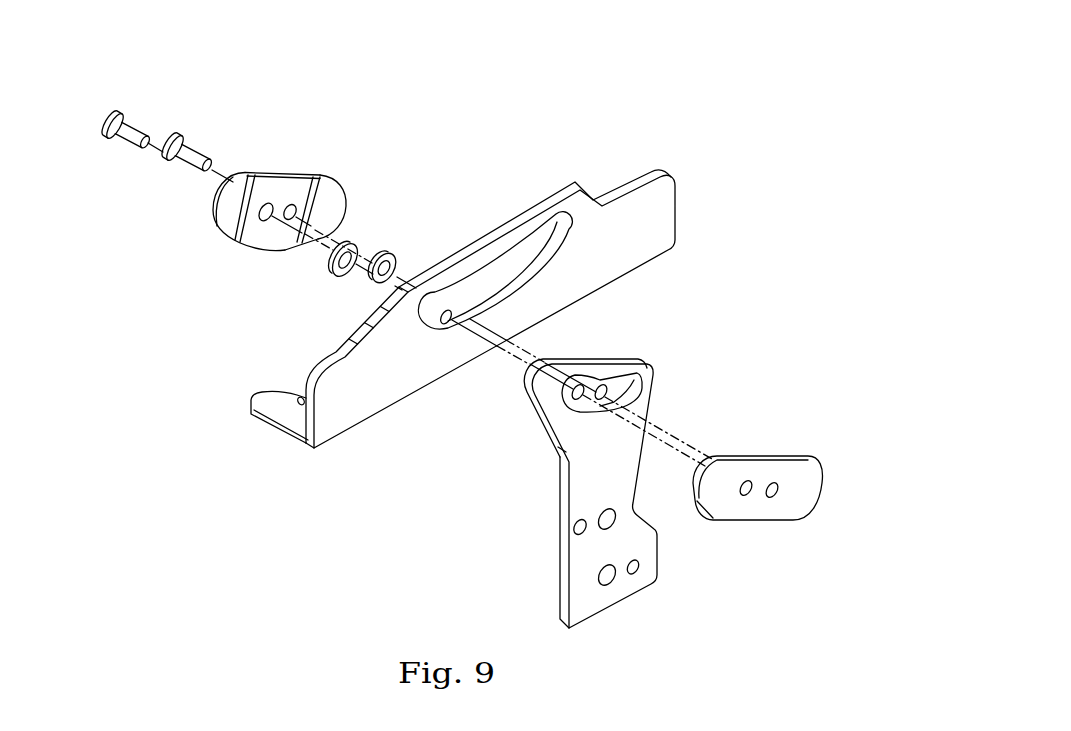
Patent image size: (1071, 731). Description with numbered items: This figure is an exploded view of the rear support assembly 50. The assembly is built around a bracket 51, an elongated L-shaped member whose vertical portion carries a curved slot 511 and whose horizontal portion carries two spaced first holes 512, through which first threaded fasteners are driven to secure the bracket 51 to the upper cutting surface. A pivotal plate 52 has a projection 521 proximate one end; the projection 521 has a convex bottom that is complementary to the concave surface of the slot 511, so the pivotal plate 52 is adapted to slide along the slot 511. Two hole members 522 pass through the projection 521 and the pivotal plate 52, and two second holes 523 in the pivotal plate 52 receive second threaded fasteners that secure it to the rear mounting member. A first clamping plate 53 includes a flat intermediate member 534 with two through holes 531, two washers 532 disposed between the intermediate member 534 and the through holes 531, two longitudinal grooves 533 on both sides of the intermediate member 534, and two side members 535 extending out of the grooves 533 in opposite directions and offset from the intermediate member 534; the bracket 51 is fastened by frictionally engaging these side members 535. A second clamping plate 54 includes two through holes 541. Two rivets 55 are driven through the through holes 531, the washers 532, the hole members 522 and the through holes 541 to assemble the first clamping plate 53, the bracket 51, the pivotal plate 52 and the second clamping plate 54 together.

The rear support assembly 50 is at (555, 110).
The bracket 51 is at (638, 228).
The curved slot 511 is at (518, 290).
The first holes 512 is at (258, 393).
The pivotal plate 52 is at (583, 487).
The projection 521 is at (560, 402).
The hole members 522 is at (600, 393).
The second holes 523 is at (576, 528).
The first clamping plate 53 is at (260, 268).
The through holes 531 is at (230, 238).
The washers 532 is at (385, 249).
The longitudinal grooves 533 is at (257, 182).
The flat intermediate member 534 is at (260, 238).
The side members 535 is at (240, 193).
The second clamping plate 54 is at (798, 480).
The through holes 541 is at (744, 496).
The rivets 55 is at (122, 128).